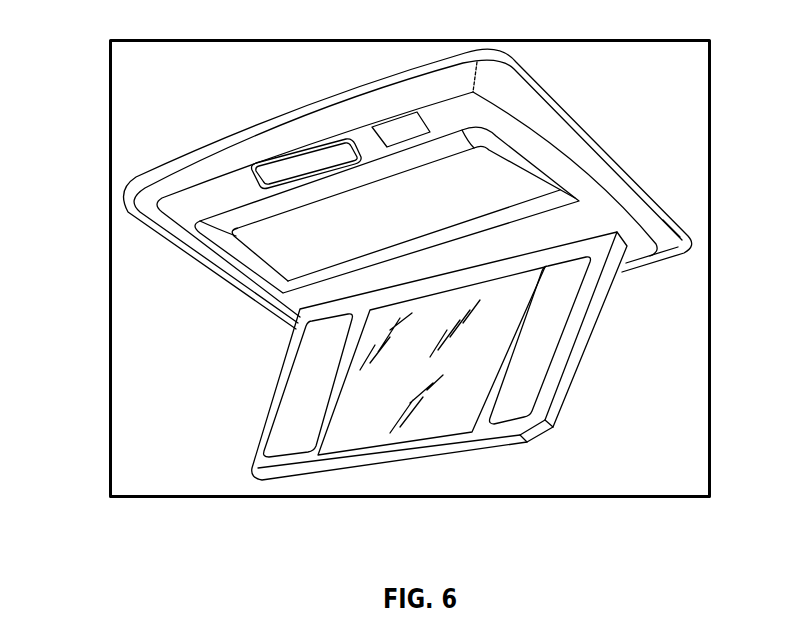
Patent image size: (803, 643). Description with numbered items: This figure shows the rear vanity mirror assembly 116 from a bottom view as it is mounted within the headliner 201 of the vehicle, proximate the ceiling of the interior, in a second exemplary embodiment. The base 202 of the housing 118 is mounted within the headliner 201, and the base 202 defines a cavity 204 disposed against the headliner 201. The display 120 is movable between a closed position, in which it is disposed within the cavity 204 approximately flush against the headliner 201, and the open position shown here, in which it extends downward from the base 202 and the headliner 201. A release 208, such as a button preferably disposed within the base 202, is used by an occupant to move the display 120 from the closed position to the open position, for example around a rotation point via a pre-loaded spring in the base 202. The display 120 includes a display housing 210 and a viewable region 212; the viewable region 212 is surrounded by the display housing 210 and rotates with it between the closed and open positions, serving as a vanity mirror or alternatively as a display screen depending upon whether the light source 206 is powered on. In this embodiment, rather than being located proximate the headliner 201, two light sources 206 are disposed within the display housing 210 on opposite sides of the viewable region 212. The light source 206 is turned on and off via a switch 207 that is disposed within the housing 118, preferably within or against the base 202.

The headliner 201 is at (255, 53).
The rear vanity mirror assembly 116 is at (130, 168).
The housing 118 is at (690, 244).
The base 202 is at (173, 210).
The cavity 204 is at (263, 240).
The switch 207 is at (397, 124).
The release 208 is at (317, 157).
The display 120 is at (589, 426).
The light source 206 is at (288, 432).
The display housing 210 is at (292, 352).
The viewable region 212 is at (347, 422).